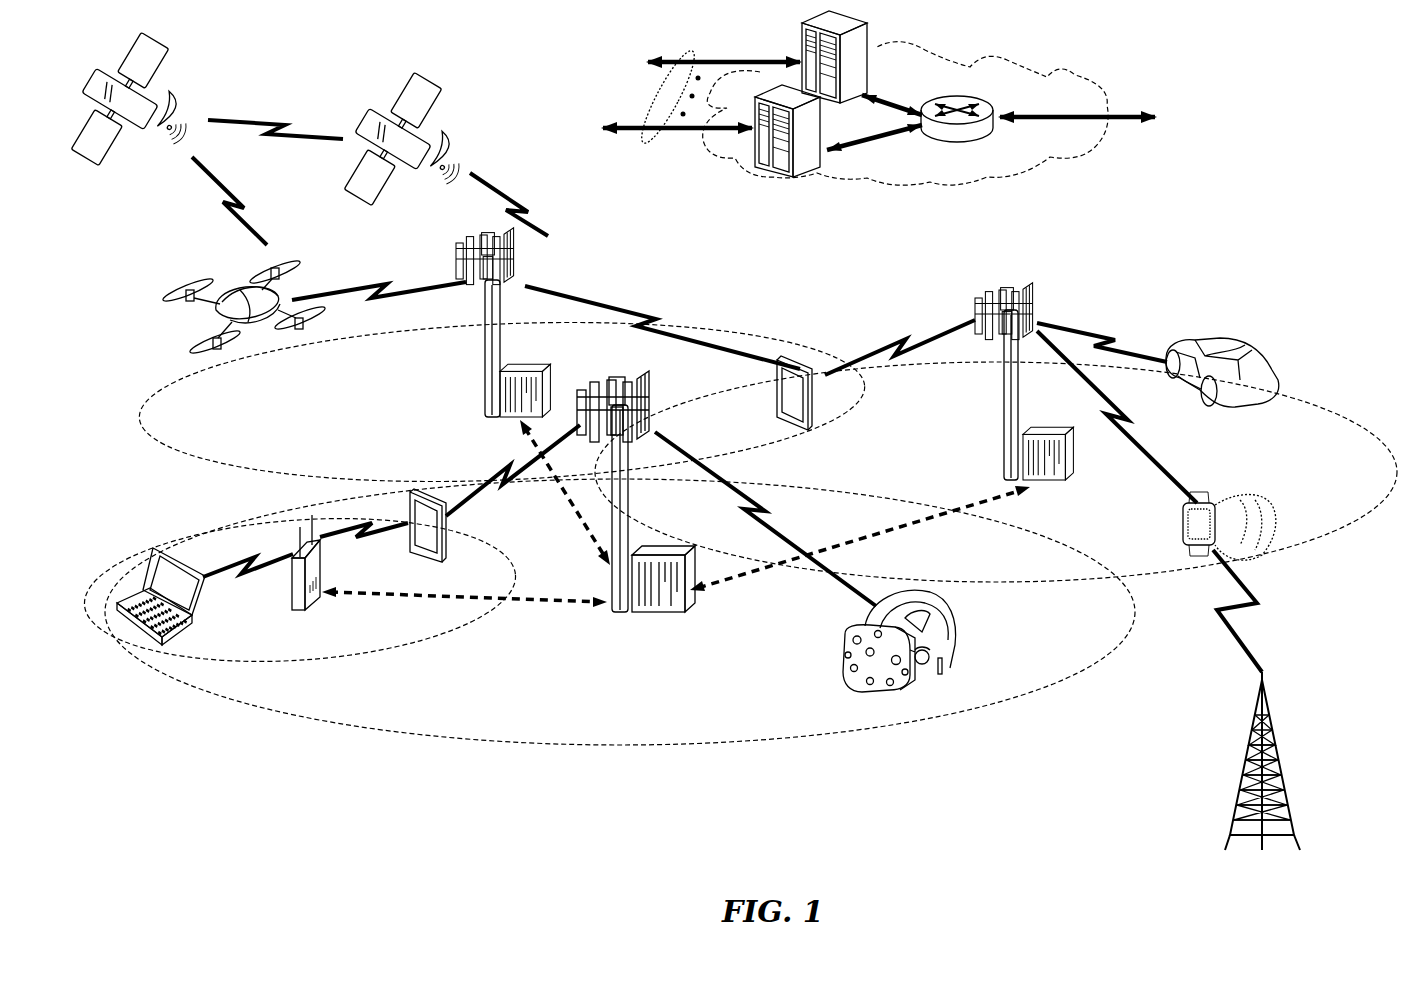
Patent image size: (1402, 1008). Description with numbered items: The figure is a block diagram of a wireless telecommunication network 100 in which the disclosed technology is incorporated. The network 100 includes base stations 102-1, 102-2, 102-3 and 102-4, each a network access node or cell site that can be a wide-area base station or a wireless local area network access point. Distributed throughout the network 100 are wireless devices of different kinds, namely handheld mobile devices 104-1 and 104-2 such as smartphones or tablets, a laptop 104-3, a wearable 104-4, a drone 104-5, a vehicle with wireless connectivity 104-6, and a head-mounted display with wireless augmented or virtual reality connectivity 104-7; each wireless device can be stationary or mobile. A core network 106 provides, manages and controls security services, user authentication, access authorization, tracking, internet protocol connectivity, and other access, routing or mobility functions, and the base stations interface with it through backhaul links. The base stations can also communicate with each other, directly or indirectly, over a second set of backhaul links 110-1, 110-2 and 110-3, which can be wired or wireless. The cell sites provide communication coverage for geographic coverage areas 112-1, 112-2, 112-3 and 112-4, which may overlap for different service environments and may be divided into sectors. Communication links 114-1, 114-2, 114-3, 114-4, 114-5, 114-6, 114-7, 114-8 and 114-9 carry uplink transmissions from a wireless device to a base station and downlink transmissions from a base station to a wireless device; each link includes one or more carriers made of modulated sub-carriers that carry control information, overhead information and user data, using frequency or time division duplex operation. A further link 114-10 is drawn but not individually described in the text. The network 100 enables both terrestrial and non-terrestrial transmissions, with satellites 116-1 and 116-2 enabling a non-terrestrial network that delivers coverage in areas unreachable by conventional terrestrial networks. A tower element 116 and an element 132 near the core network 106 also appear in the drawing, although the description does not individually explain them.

The wireless telecommunication network 100 is at (1296, 100).
The base station 102-1 is at (620, 614).
The base station 102-2 is at (480, 368).
The base station 102-3 is at (1000, 405).
The base station 102-4 is at (293, 593).
The handheld mobile device 104-1 is at (445, 540).
The handheld mobile device 104-2 is at (770, 400).
The laptop 104-3 is at (140, 638).
The wearable 104-4 is at (1207, 502).
The drone 104-5 is at (252, 338).
The vehicle with wireless connectivity 104-6 is at (1248, 358).
The head-mounted display 104-7 is at (948, 628).
The core network 106 is at (992, 185).
The backhaul link 110-1 is at (360, 594).
The backhaul link 110-2 is at (925, 522).
The backhaul link 110-3 is at (580, 527).
The coverage area 112-1 is at (542, 742).
The coverage area 112-2 is at (428, 650).
The coverage area 112-3 is at (205, 473).
The coverage area 112-4 is at (1305, 393).
The communication link 114-1 is at (820, 512).
The communication link 114-2 is at (500, 478).
The communication link 114-3 is at (218, 573).
The communication link 114-4 is at (365, 540).
The communication link 114-5 is at (372, 288).
The communication link 114-6 is at (898, 343).
The communication link 114-7 is at (655, 325).
The communication link 114-8 is at (1135, 443).
The communication link 114-9 is at (1135, 309).
The communication link 114-10 is at (1252, 610).
The broadcast tower 116 is at (1278, 742).
The satellite 116-1 is at (177, 101).
The satellite 116-2 is at (455, 143).
The network interface 132 is at (660, 150).